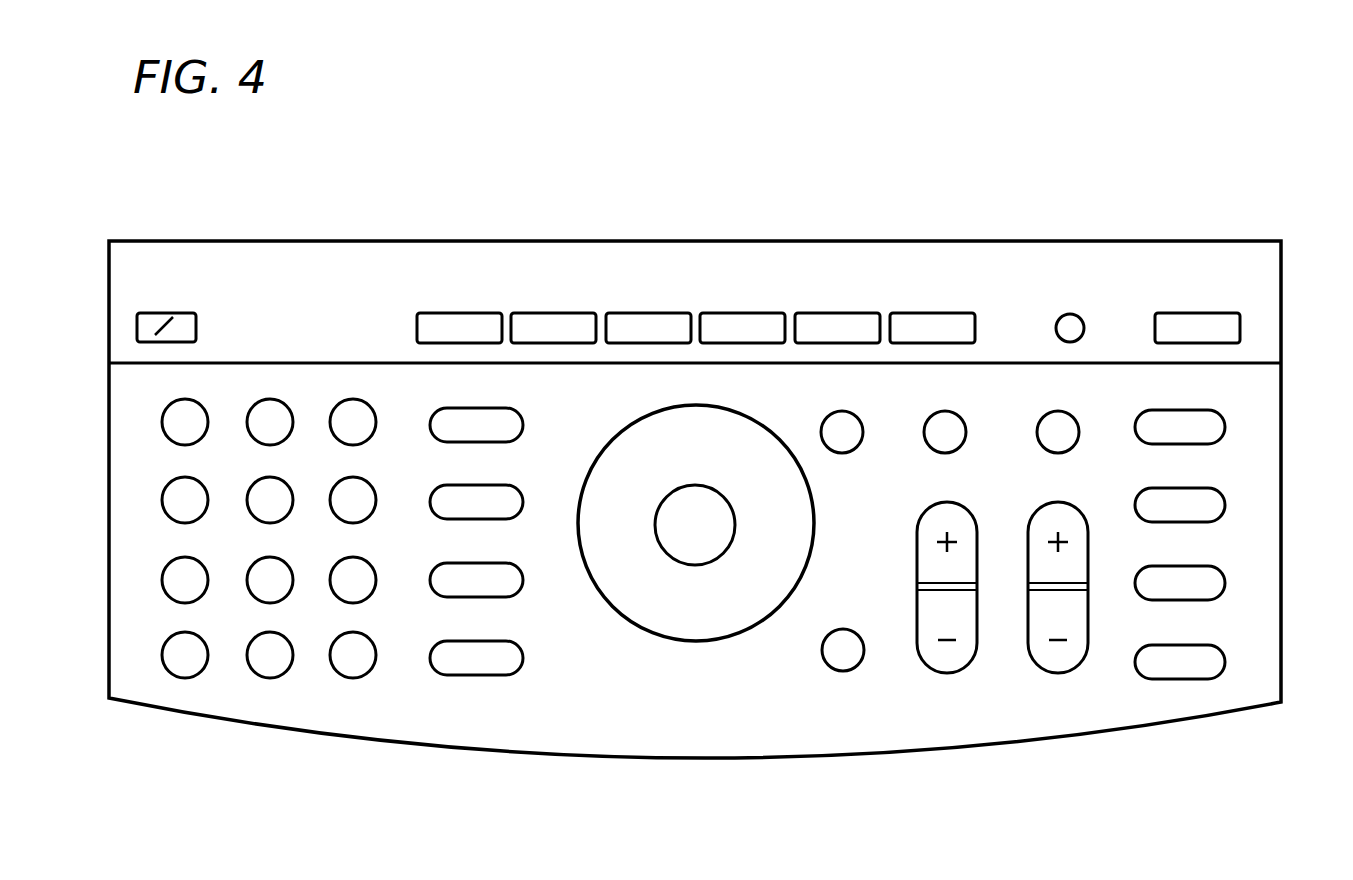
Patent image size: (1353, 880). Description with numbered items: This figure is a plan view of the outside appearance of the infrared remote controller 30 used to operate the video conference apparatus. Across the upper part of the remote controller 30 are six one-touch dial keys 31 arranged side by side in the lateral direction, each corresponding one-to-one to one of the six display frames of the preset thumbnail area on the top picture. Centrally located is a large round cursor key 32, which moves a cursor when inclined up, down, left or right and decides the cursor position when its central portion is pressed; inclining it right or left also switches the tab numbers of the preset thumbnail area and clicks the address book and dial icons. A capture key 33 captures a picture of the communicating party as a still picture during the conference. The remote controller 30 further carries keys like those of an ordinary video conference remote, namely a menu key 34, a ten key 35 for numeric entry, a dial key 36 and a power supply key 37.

The infrared remote controller 30 is at (433, 877).
The one-touch dial keys 31 is at (696, 245).
The cursor key 32 is at (697, 642).
The capture key 33 is at (1225, 422).
The menu key 34 is at (842, 453).
The ten key 35 is at (160, 683).
The dial key 36 is at (166, 312).
The power supply key 37 is at (1195, 312).